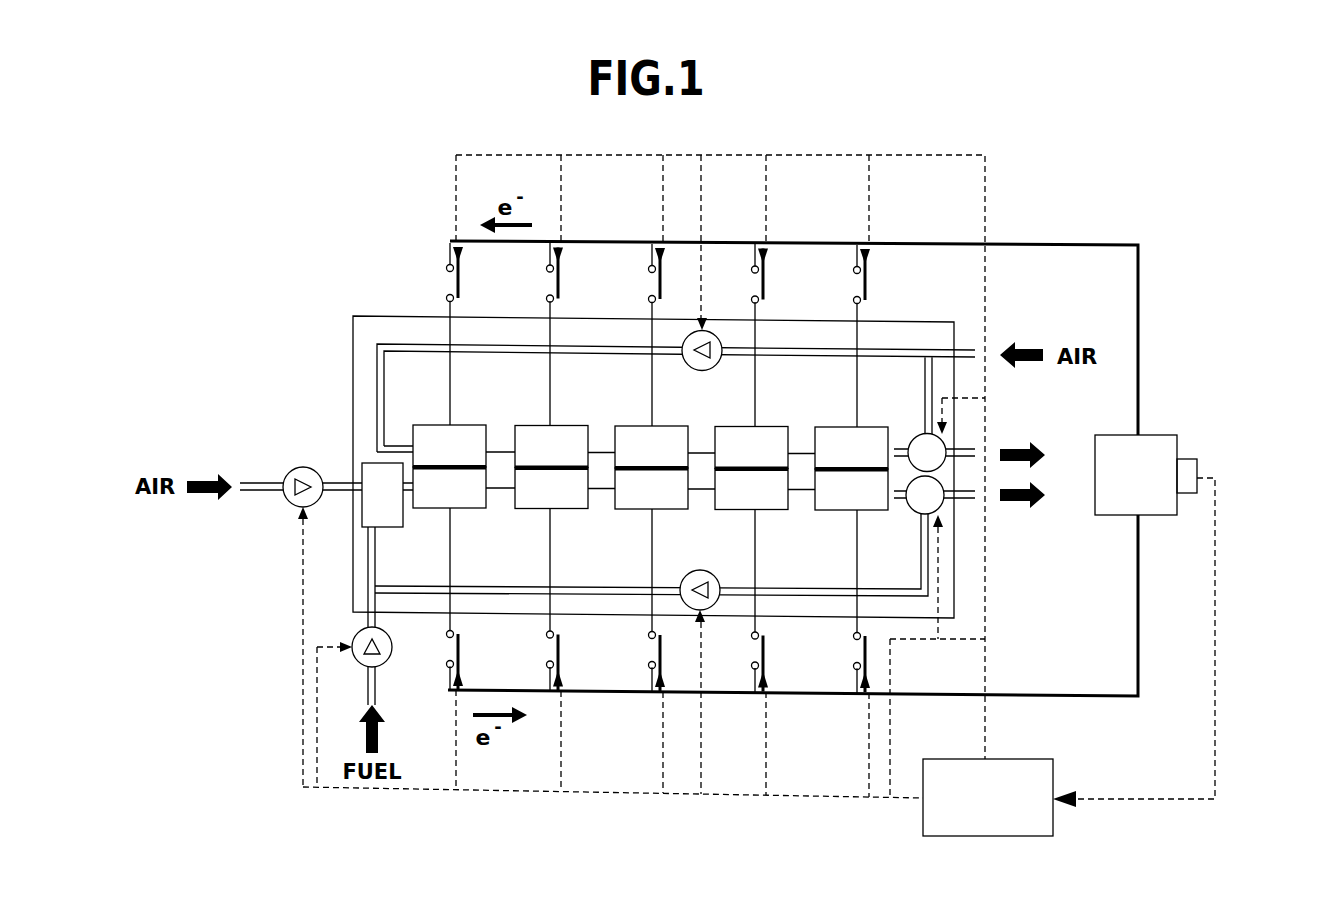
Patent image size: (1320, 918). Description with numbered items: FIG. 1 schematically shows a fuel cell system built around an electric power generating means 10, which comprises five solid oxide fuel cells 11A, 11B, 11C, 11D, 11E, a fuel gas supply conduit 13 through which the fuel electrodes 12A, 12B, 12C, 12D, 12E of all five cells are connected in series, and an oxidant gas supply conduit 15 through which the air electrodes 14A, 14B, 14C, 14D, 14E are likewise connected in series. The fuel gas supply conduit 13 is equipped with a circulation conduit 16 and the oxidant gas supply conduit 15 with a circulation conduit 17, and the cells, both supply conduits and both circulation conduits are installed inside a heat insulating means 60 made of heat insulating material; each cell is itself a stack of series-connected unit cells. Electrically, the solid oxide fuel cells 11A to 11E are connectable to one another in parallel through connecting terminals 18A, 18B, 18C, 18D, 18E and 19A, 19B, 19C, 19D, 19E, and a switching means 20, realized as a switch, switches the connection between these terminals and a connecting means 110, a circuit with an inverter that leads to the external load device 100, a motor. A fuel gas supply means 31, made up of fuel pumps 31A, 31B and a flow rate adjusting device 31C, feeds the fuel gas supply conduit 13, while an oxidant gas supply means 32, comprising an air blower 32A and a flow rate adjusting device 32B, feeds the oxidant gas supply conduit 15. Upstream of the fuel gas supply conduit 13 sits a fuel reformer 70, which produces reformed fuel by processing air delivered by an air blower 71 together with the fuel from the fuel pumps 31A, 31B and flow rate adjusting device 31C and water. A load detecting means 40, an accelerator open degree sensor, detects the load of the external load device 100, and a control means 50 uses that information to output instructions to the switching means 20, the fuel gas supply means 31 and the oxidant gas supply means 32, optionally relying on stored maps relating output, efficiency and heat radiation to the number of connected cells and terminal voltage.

The electric power generating means 10 is at (366, 358).
The solid oxide fuel cell 11A is at (484, 521).
The solid oxide fuel cell 11B is at (586, 521).
The solid oxide fuel cell 11C is at (688, 521).
The solid oxide fuel cell 11D is at (790, 522).
The solid oxide fuel cell 11E is at (893, 522).
The fuel electrode 12A is at (433, 498).
The fuel electrode 12B is at (560, 498).
The fuel electrode 12C is at (660, 498).
The fuel electrode 12D is at (762, 498).
The fuel electrode 12E is at (865, 498).
The fuel gas supply conduit 13 is at (366, 553).
The air electrode 14A is at (462, 432).
The air electrode 14B is at (564, 432).
The air electrode 14C is at (661, 432).
The air electrode 14D is at (759, 433).
The air electrode 14E is at (859, 433).
The oxidant gas supply conduit 15 is at (378, 400).
The circulation conduit 16 is at (415, 592).
The circulation conduit 17 is at (935, 378).
The connecting terminal 18A is at (456, 622).
The connecting terminal 18B is at (558, 622).
The connecting terminal 18C is at (653, 623).
The connecting terminal 18D is at (758, 623).
The connecting terminal 18E is at (858, 622).
The connecting terminal 19A is at (452, 311).
The connecting terminal 19B is at (552, 311).
The connecting terminal 19C is at (659, 305).
The connecting terminal 19D is at (757, 312).
The connecting terminal 19E is at (859, 312).
The switching means 20 is at (460, 279).
The fuel gas supply means 31 is at (347, 672).
The fuel pump 31A is at (390, 660).
The fuel pump 31B is at (717, 607).
The flow rate adjusting device 31C is at (945, 506).
The oxidant gas supply means 32 is at (704, 331).
The air blower 32A is at (720, 337).
The flow rate adjusting device 32B is at (948, 441).
The load detecting means 40 is at (1200, 467).
The control means 50 is at (992, 824).
The heat insulating means 60 is at (386, 327).
The fuel reformer 70 is at (363, 473).
The air blower 71 is at (300, 473).
The external load device 100 is at (1160, 446).
The connecting means 110 is at (1141, 297).